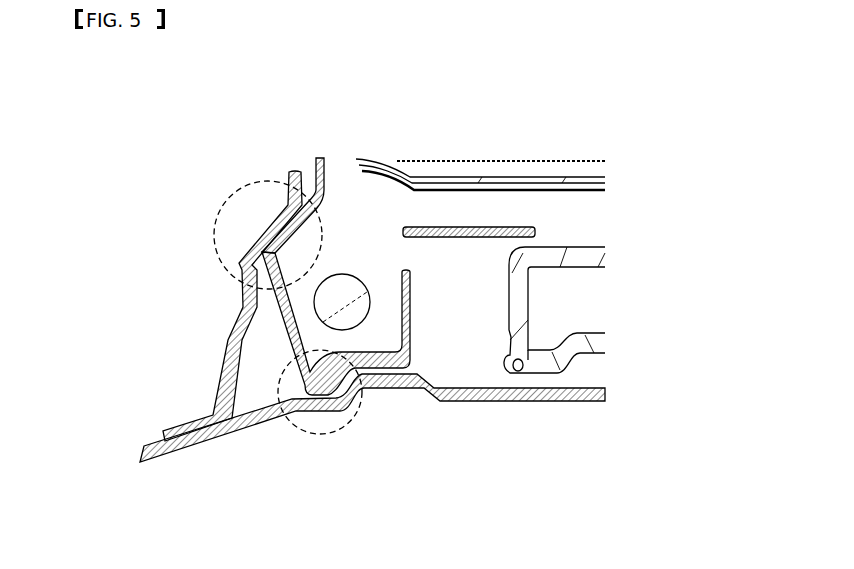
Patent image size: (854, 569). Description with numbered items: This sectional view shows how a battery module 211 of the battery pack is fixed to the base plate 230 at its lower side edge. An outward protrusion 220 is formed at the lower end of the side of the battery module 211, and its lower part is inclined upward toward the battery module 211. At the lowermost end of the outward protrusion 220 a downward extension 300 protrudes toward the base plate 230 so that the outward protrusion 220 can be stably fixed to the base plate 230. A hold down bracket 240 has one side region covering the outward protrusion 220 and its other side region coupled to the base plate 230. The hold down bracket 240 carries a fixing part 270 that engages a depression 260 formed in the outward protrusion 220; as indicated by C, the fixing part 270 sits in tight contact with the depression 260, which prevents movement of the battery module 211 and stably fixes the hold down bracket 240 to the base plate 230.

The battery module 211 is at (601, 170).
The outward protrusion 220 is at (325, 158).
The base plate 230 is at (227, 438).
The hold down bracket 240 is at (216, 347).
The depression 260 is at (291, 252).
The fixing part 270 is at (246, 216).
The downward extension 300 is at (367, 418).
The tight-contact region C is at (215, 263).